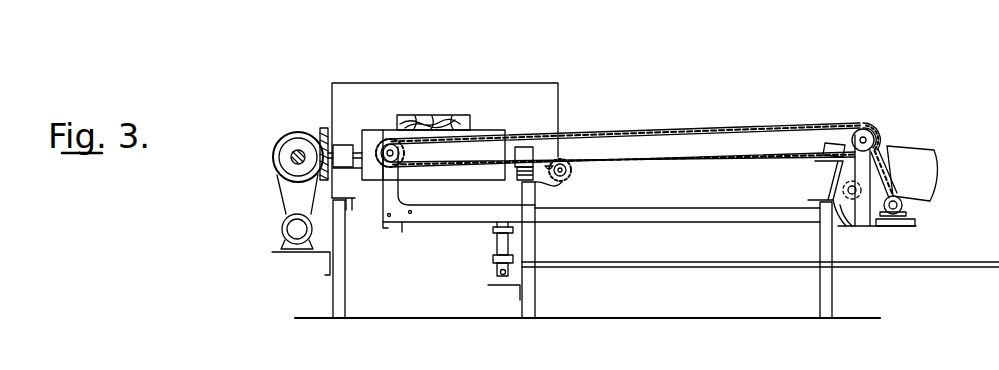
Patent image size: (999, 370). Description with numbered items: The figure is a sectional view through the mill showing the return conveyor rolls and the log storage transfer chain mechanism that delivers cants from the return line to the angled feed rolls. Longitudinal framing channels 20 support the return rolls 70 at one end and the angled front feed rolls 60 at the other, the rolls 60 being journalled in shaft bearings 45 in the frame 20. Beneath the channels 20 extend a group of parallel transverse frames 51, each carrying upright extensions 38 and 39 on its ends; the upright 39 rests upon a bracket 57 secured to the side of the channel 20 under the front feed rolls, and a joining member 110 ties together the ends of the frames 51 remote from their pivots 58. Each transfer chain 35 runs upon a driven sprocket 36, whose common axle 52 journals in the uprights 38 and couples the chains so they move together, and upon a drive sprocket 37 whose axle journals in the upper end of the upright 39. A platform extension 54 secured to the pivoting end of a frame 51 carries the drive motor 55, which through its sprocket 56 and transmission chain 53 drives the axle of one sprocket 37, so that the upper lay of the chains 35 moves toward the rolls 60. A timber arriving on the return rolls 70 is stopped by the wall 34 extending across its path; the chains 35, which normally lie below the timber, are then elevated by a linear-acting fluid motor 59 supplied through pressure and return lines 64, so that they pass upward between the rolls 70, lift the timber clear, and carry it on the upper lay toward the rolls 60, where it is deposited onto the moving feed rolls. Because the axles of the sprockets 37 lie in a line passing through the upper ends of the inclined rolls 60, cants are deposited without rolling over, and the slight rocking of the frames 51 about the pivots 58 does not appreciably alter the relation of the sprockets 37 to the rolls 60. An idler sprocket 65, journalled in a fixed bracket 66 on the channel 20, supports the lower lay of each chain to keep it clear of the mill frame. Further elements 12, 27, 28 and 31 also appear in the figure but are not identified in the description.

The articles / material in hopper 12 is at (447, 117).
The longitudinal framing channel 20 is at (356, 238).
The drive pulley 27 is at (283, 130).
The motor 28 is at (283, 235).
The clutch disc 31 is at (324, 128).
The wall 34 is at (510, 93).
The timber transfer chain 35 is at (768, 130).
The driven sprocket 36 is at (402, 155).
The drive sprocket 37 is at (848, 125).
The upright extension 38 is at (395, 188).
The upright 39 is at (866, 168).
The shaft bearing 45 is at (342, 147).
The transverse frame 51 is at (717, 223).
The common axle 52 is at (385, 147).
The transmission chain 53 is at (903, 173).
The platform extension 54 is at (916, 223).
The drive motor 55 is at (904, 212).
The sprocket 56 is at (908, 207).
The bracket 57 is at (840, 205).
The pivot 58 is at (856, 194).
The fluid motor 59 is at (497, 237).
The angled feed roll 60 is at (912, 154).
The fluid pressure and return lines 64 is at (648, 264).
The idler sprocket 65 is at (575, 172).
The fixed bracket 66 is at (555, 190).
The return roll 70 is at (368, 132).
The joining member 110 is at (403, 230).